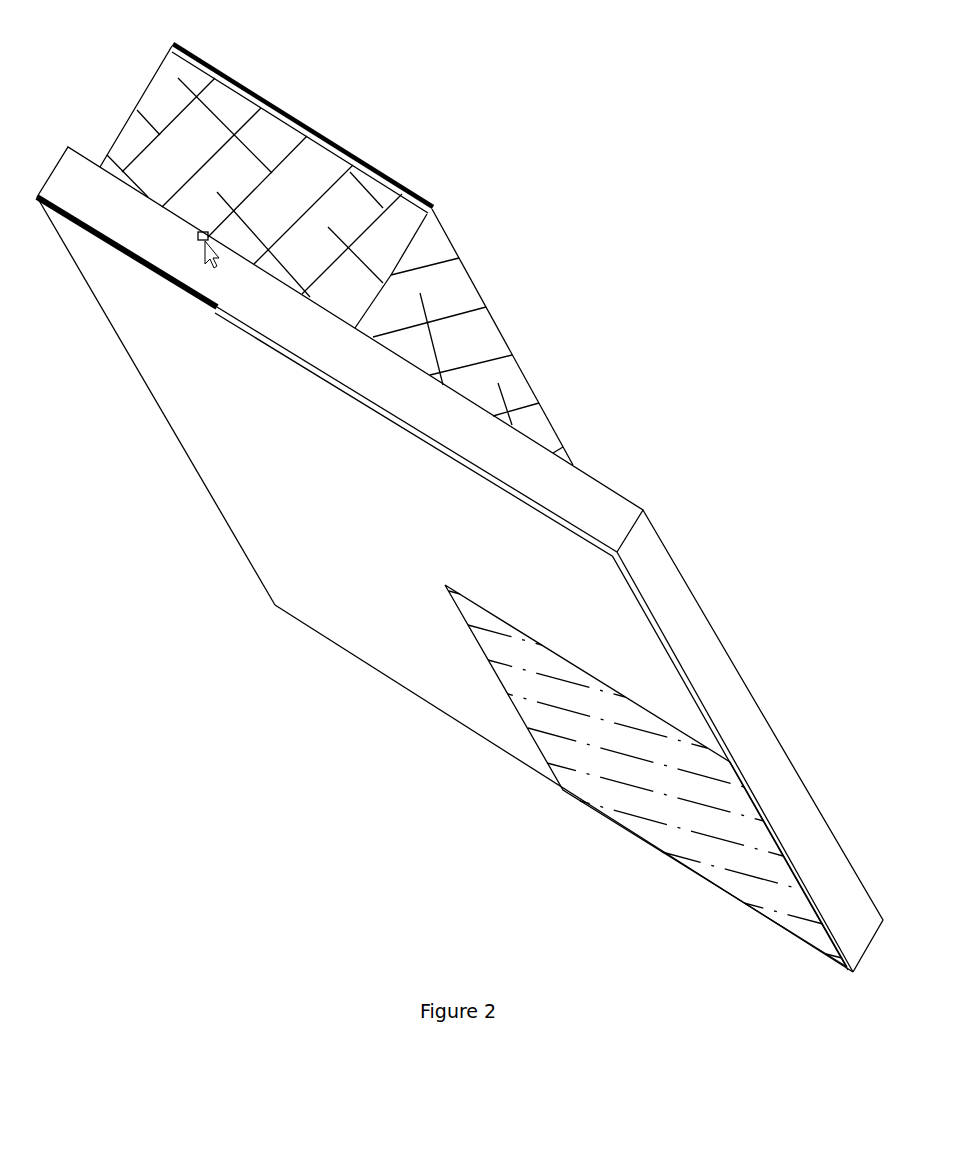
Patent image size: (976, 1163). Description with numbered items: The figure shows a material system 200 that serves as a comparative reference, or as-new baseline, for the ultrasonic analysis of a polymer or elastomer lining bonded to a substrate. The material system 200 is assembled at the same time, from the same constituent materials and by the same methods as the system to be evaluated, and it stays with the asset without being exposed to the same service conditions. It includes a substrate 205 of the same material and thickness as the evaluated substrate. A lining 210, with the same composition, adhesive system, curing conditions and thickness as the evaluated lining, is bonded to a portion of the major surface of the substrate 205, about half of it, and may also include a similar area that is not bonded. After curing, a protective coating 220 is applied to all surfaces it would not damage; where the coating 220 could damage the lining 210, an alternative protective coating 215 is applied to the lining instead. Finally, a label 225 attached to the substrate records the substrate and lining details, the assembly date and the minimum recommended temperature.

The material system 200 is at (460, 504).
The substrate 205 is at (522, 462).
The lining 210 is at (453, 252).
The alternative protective coating 215 is at (303, 125).
The protective coating 220 is at (708, 712).
The label 225 is at (553, 722).